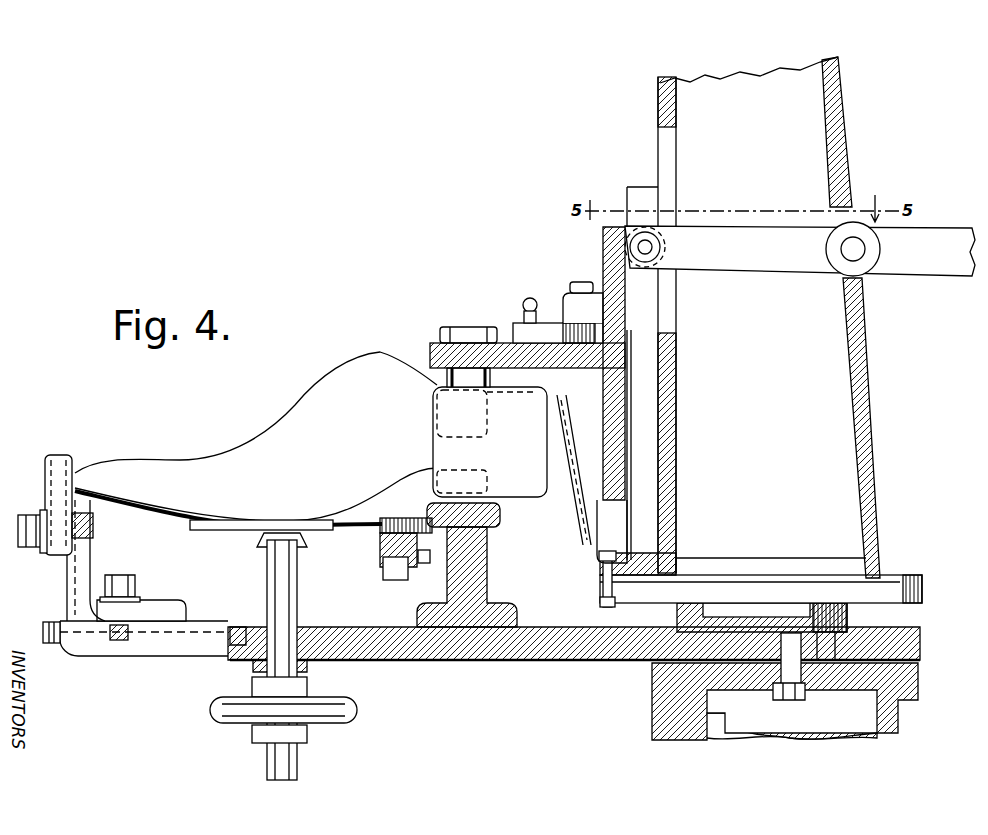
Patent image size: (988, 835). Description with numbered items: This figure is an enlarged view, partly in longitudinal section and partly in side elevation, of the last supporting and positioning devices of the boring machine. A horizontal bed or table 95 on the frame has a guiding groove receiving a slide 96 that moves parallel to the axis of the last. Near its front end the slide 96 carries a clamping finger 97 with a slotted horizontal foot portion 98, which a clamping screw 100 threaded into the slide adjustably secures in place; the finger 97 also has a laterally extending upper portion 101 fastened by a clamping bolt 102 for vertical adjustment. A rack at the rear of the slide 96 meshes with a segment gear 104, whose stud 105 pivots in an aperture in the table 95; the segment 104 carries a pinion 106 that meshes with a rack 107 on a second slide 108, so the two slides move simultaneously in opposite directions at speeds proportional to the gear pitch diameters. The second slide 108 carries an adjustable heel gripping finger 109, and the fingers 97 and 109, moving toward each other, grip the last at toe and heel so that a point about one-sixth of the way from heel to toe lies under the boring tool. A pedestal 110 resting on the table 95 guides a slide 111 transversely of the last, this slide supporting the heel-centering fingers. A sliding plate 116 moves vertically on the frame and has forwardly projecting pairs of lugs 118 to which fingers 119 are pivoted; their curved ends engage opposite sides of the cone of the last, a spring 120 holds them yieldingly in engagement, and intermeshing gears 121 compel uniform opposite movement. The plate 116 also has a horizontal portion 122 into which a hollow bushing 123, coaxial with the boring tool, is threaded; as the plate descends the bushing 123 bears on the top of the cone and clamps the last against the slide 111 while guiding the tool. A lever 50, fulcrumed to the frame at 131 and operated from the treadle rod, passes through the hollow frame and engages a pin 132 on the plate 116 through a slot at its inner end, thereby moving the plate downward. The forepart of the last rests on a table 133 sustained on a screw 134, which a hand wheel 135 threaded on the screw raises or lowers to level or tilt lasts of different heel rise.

The lever 50 is at (745, 270).
The table 95 is at (94, 658).
The slide 96 is at (43, 630).
The clamping finger 97 is at (68, 580).
The horizontal foot portion 98 is at (160, 622).
The clamping screw 100 is at (130, 575).
The laterally extending upper portion 101 is at (62, 455).
The clamping bolt 102 is at (32, 515).
The segment gear 104 is at (645, 660).
The stud 105 is at (771, 695).
The pinion 106 is at (818, 635).
The rack 107 is at (850, 617).
The second slide 108 is at (613, 590).
The heel gripping finger 109 is at (578, 538).
The pedestal 110 is at (487, 570).
The slide 111 is at (500, 512).
The sliding plate 116 is at (655, 307).
The lugs 118 is at (578, 300).
The fingers 119 is at (488, 422).
The spring 120 is at (530, 298).
The intermeshing gears 121 is at (593, 337).
The horizontal portion 122 is at (505, 343).
The hollow bushing 123 is at (458, 327).
The fulcrum 131 is at (856, 252).
The pin 132 is at (645, 247).
The table 133 is at (345, 530).
The screw 134 is at (298, 768).
The hand wheel 135 is at (357, 710).